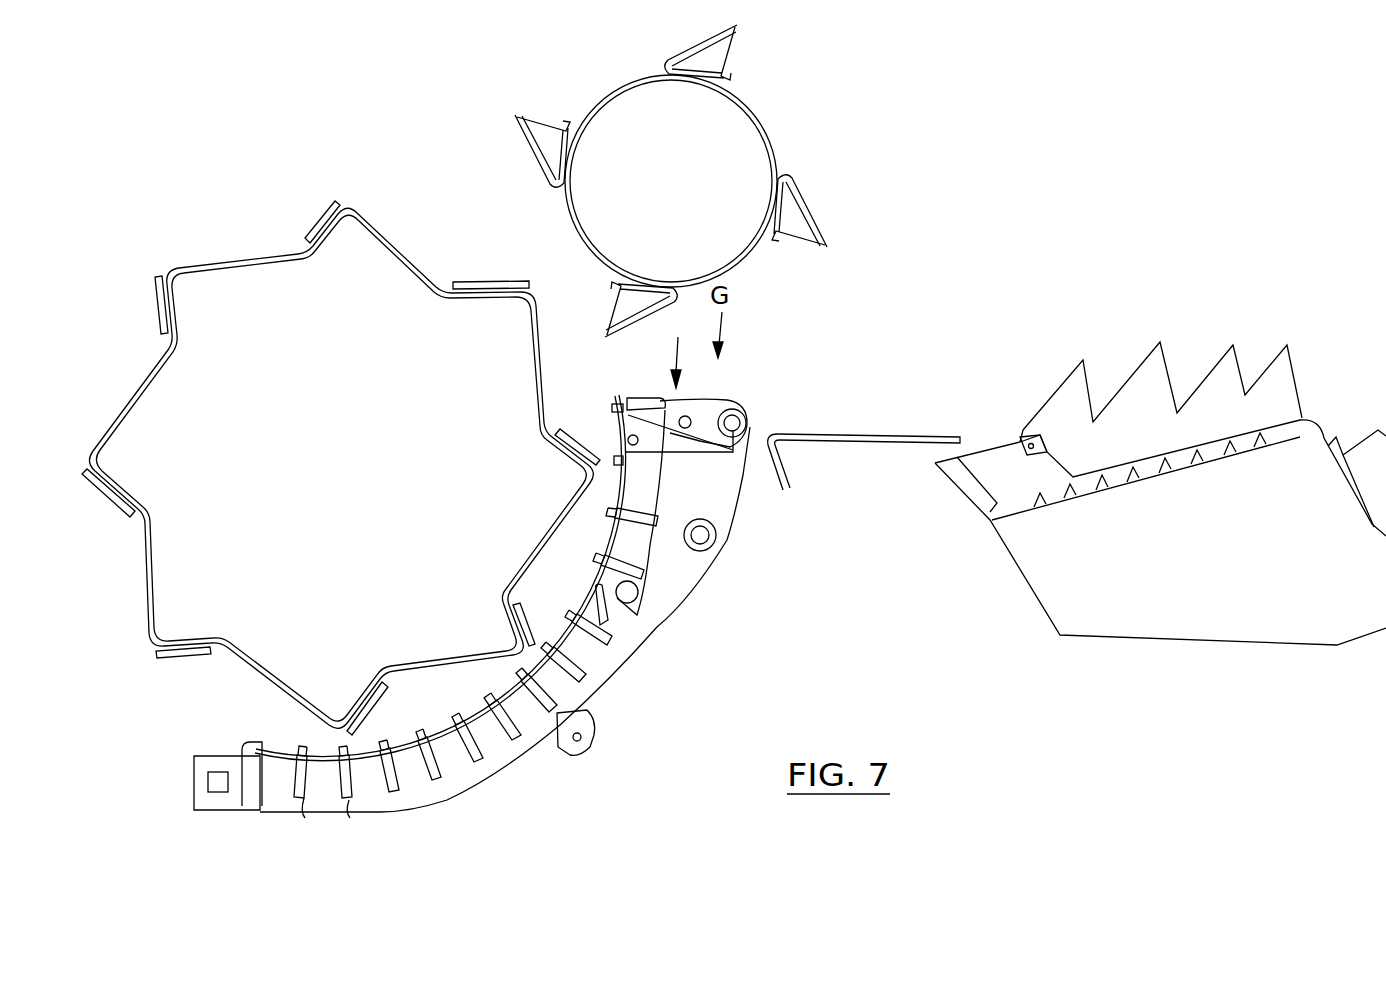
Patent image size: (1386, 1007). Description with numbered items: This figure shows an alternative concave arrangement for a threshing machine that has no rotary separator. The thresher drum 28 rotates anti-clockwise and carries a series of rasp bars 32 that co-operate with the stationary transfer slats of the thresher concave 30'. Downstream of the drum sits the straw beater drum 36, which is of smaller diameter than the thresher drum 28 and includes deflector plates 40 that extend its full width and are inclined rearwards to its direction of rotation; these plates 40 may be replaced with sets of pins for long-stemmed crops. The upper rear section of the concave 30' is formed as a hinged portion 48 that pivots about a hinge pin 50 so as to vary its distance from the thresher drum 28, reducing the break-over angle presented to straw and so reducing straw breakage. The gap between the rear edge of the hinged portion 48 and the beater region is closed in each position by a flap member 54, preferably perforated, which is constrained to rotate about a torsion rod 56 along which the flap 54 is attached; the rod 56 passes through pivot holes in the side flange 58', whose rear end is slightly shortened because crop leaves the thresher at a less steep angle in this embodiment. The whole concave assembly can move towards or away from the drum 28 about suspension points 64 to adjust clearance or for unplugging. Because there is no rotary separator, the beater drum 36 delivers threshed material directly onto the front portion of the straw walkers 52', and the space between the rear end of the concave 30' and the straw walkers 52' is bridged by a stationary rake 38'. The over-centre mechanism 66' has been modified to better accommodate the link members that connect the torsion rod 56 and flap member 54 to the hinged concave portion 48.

The thresher drum 28 is at (187, 547).
The rasp bars 32 is at (170, 262).
The beater drum 36 is at (760, 158).
The deflector plates 40 is at (540, 130).
The over-centre mechanism 66' is at (687, 346).
The thresher concave 30' is at (426, 607).
The suspension points 64 is at (703, 540).
The hinge pin 50 is at (628, 594).
The hinged portion 48 is at (648, 557).
The side flange 58' is at (541, 619).
The flap member 54 is at (700, 400).
The torsion rod 56 is at (747, 415).
The stationary rake 38' is at (864, 483).
The straw walkers 52' is at (1160, 508).